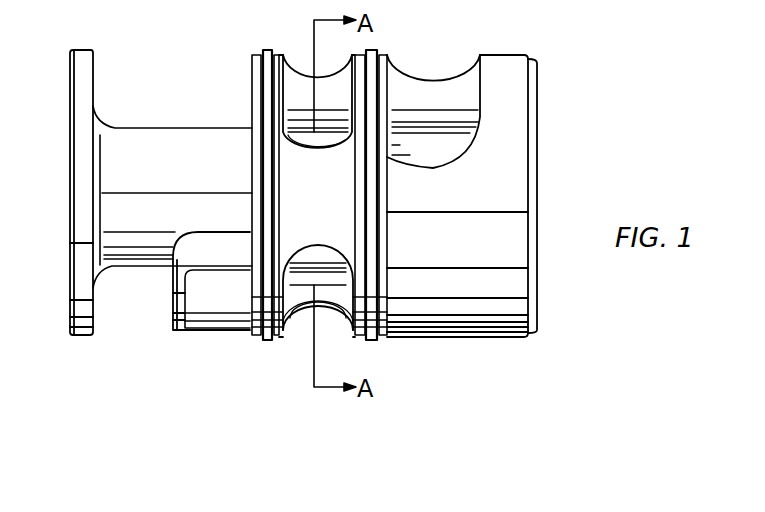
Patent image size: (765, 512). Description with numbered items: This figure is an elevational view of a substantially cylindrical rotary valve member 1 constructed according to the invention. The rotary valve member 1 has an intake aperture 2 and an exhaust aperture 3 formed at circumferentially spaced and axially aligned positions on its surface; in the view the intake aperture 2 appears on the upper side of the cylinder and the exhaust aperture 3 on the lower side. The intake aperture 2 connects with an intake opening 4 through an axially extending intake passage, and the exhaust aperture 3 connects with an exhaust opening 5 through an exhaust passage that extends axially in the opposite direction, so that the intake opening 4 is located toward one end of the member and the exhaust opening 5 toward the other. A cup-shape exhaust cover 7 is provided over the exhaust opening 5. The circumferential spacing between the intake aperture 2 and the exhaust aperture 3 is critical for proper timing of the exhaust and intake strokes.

The rotary valve member 1 is at (443, 308).
The intake aperture 2 is at (337, 82).
The exhaust aperture 3 is at (299, 303).
The intake opening 4 is at (442, 88).
The exhaust opening 5 is at (223, 317).
The cup-shape exhaust cover 7 is at (178, 283).